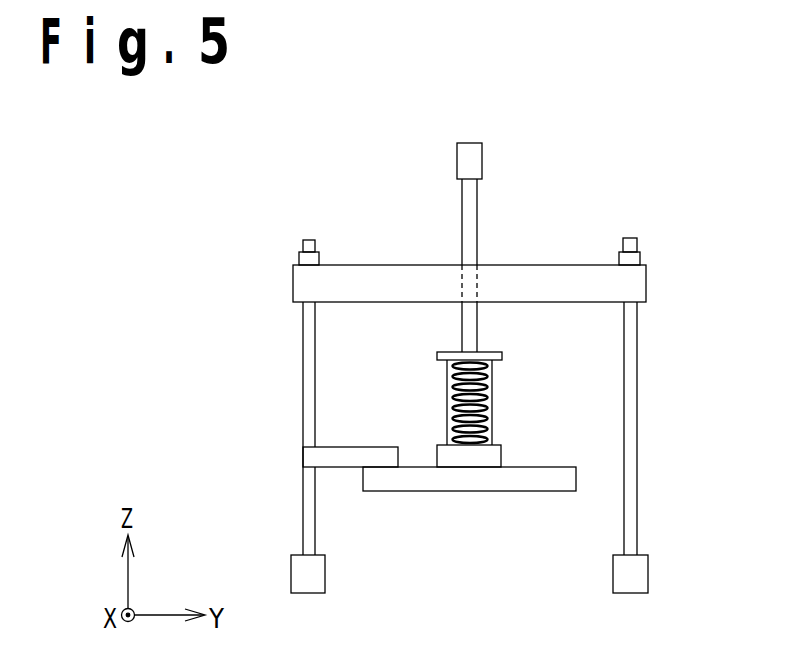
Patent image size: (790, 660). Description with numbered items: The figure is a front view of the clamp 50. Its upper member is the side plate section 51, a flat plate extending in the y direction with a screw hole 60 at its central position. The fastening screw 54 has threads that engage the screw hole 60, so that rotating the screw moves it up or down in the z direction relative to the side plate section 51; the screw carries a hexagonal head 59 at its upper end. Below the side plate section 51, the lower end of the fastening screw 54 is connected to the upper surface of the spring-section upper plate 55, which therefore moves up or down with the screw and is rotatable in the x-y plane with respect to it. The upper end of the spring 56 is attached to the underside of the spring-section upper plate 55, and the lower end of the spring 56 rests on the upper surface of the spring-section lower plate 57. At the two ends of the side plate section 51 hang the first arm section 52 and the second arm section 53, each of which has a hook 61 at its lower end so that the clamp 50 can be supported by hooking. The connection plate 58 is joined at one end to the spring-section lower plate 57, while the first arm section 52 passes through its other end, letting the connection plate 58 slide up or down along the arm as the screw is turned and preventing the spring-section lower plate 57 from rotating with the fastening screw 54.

The clamp 50 is at (305, 214).
The side plate section 51 is at (411, 274).
The first arm section 52 is at (304, 345).
The second arm section 53 is at (633, 345).
The fastening screw 54 is at (478, 200).
The spring-section upper plate 55 is at (502, 354).
The spring 56 is at (495, 406).
The spring-section lower plate 57 is at (517, 482).
The connection plate 58 is at (365, 456).
The hexagonal head 59 is at (483, 163).
The screw hole 60 is at (478, 265).
The hook 61 is at (299, 576).